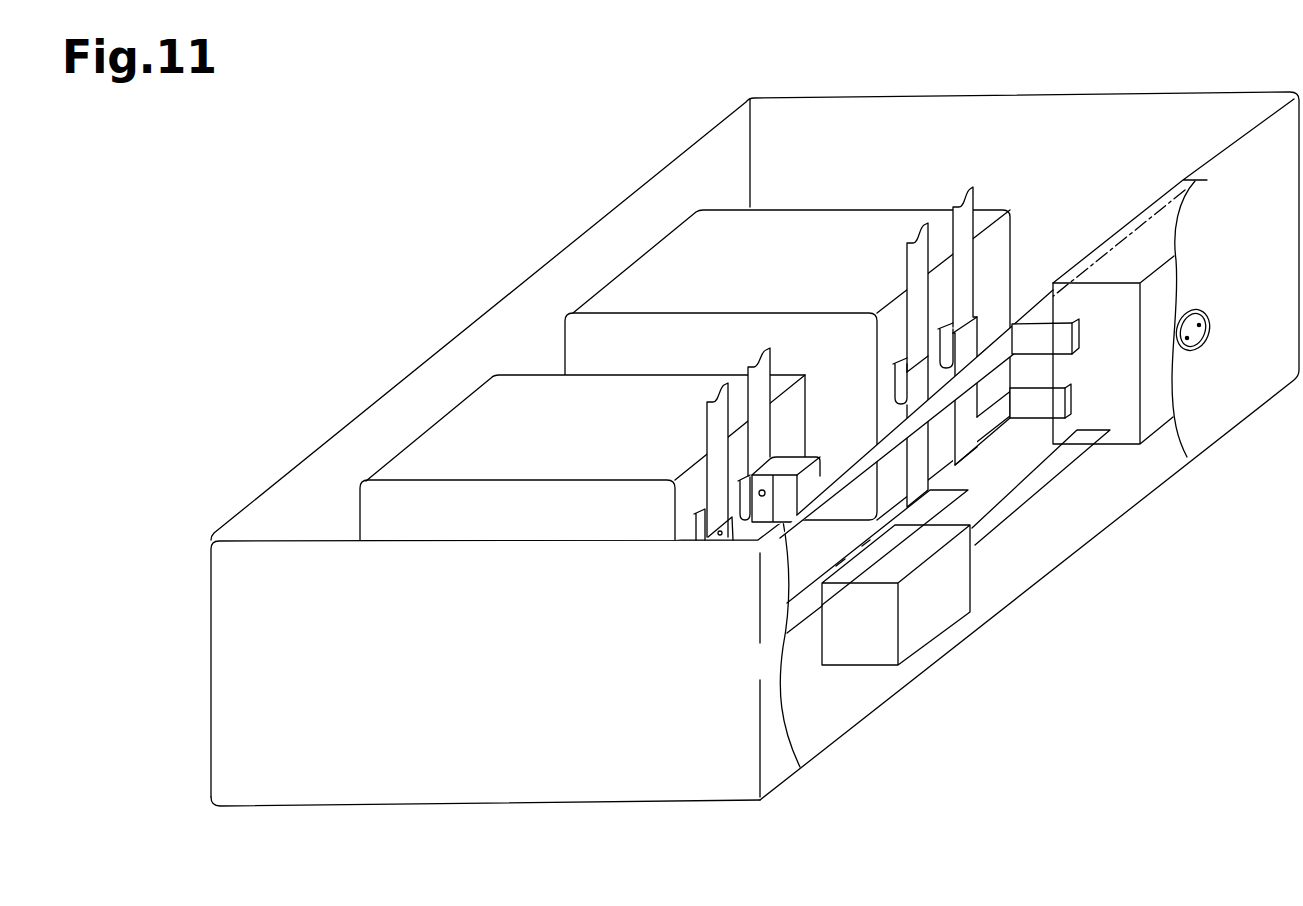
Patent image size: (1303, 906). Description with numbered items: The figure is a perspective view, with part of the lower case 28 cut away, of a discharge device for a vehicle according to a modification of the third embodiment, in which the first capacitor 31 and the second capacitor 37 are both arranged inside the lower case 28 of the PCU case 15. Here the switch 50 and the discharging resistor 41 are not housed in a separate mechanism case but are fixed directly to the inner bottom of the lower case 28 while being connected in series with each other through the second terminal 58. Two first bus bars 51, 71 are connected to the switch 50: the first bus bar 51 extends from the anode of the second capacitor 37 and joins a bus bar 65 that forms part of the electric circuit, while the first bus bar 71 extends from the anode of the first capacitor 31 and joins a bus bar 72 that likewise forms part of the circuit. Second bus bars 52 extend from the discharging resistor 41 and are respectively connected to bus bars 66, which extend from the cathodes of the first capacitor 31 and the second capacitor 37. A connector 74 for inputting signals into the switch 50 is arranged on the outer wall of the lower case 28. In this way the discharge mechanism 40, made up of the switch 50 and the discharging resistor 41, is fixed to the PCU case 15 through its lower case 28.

The PCU case 15 is at (755, 449).
The lower case 28 is at (552, 266).
The first capacitor 31 is at (848, 217).
The second capacitor 37 is at (505, 532).
The discharge mechanism 40 is at (981, 442).
The discharging resistor 41 is at (833, 653).
The switch 50 is at (1142, 210).
The first bus bar 51 is at (1070, 335).
The second bus bars 52 is at (917, 517).
The second terminal 58 is at (1017, 492).
The bus bar 65 is at (768, 357).
The bus bars 66 is at (912, 262).
The first bus bar 71 is at (1055, 402).
The bus bar 72 is at (972, 193).
The connector 74 is at (1212, 333).